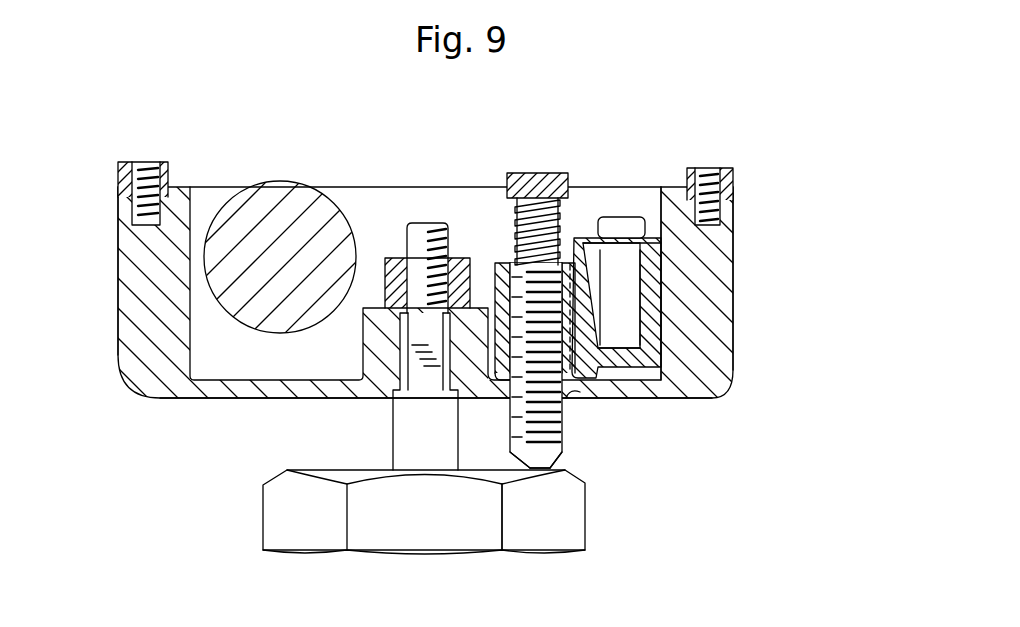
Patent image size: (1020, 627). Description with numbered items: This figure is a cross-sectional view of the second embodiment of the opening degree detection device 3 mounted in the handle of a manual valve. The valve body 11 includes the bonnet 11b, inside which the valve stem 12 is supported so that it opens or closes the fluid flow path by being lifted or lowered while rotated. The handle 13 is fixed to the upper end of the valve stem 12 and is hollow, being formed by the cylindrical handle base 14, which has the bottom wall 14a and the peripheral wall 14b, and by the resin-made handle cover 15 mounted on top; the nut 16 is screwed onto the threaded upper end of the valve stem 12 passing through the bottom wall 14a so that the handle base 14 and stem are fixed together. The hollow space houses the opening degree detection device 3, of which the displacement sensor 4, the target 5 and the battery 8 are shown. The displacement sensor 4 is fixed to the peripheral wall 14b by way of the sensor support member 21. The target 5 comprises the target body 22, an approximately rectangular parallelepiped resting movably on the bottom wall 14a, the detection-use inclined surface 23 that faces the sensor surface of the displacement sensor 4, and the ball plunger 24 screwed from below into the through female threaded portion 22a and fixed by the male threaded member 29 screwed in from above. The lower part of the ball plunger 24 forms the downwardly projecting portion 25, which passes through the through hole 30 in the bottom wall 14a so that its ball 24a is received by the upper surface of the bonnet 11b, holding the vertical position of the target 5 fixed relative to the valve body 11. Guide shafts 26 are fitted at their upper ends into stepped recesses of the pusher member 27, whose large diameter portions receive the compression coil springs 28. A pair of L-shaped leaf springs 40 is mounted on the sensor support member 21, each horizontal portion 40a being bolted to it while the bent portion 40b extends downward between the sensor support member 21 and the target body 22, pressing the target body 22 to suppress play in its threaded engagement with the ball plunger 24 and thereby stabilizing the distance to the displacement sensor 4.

The opening degree detection device 3 is at (640, 160).
The displacement sensor 4 is at (613, 297).
The target 5 is at (577, 247).
The battery 8 is at (272, 190).
The valve body 11 is at (585, 537).
The bonnet 11b is at (568, 495).
The valve stem 12 is at (402, 418).
The handle 13 is at (118, 252).
The handle base 14 is at (135, 328).
The bottom wall 14a is at (242, 387).
The peripheral wall 14b is at (717, 313).
The handle cover 15 is at (122, 182).
The nut 16 is at (395, 260).
The sensor support member 21 is at (680, 352).
The target body 22 is at (507, 260).
The through female threaded portion 22a is at (512, 262).
The detection-use inclined surface 23 is at (605, 282).
The ball plunger 24 is at (530, 373).
The ball 24a is at (545, 470).
The downwardly projecting portion 25 is at (537, 462).
The guide shaft 26 is at (560, 228).
The pusher member 27 is at (528, 173).
The compression coil spring 28 is at (545, 210).
The male threaded member 29 is at (505, 308).
The through hole 30 is at (570, 402).
The leaf spring 40 is at (615, 400).
The horizontal portion 40a is at (628, 237).
The bent portion 40b is at (662, 395).